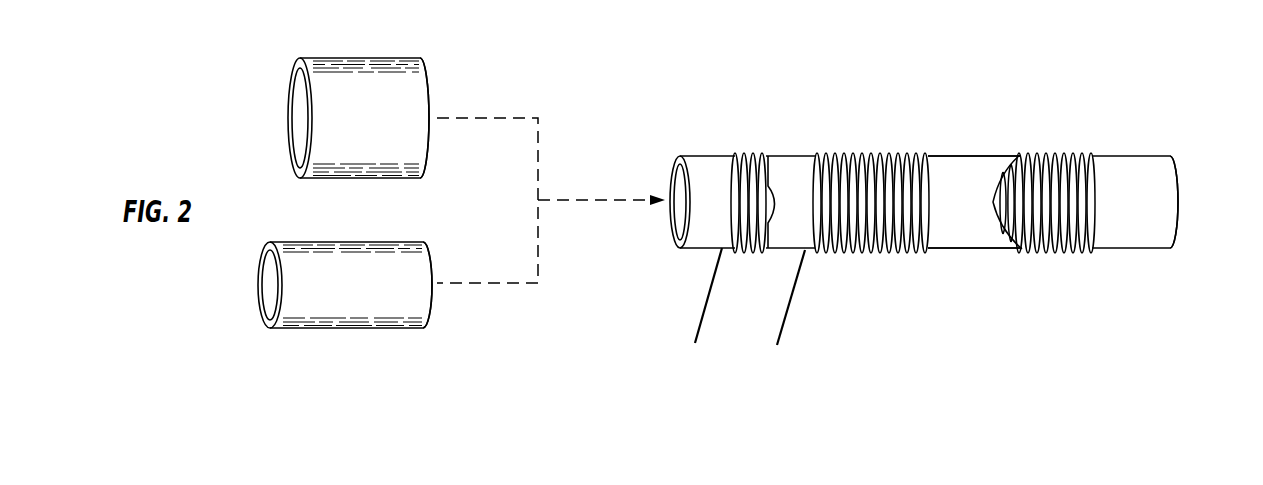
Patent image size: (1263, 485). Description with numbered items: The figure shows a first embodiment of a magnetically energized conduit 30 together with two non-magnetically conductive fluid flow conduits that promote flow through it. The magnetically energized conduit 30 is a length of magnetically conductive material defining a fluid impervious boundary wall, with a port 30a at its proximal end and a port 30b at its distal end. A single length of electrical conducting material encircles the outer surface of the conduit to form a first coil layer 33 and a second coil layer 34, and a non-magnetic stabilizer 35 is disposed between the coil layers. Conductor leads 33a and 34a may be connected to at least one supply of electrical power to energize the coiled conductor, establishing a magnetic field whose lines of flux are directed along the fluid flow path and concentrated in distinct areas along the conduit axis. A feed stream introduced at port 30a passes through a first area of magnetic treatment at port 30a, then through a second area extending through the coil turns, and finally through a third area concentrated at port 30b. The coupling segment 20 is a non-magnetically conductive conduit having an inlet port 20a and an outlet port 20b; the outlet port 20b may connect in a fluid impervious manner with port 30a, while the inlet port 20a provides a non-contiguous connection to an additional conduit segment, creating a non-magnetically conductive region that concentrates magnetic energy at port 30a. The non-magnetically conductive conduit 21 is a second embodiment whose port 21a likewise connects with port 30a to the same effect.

The coupling segment 20 is at (382, 128).
The inlet port 20a is at (301, 98).
The outlet port 20b is at (430, 95).
The non-magnetically conductive conduit 21 is at (365, 298).
The port 21a is at (428, 303).
The magnetically energized conduit 30 is at (722, 214).
The port 30a is at (677, 178).
The port 30b is at (1178, 232).
The first coil layer 33 is at (1037, 155).
The conductor lead 33a is at (702, 315).
The second coil layer 34 is at (870, 152).
The conductor lead 34a is at (788, 312).
The non-magnetic stabilizer 35 is at (983, 210).